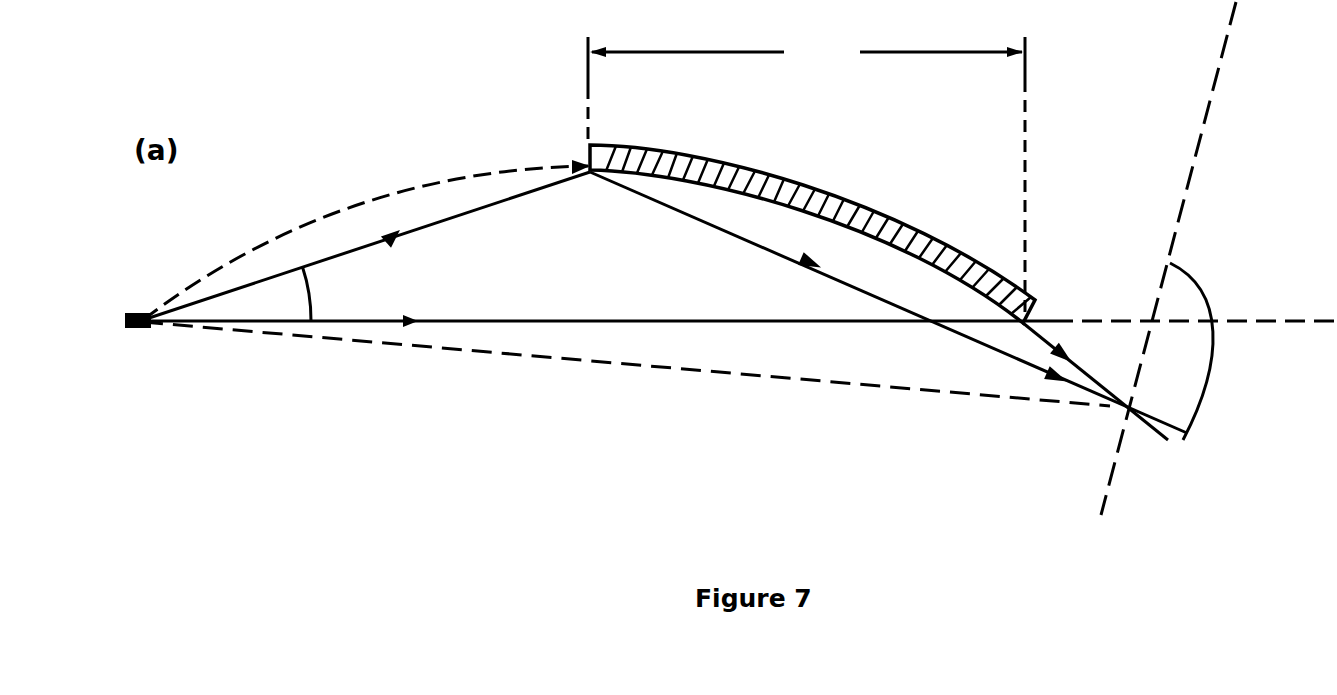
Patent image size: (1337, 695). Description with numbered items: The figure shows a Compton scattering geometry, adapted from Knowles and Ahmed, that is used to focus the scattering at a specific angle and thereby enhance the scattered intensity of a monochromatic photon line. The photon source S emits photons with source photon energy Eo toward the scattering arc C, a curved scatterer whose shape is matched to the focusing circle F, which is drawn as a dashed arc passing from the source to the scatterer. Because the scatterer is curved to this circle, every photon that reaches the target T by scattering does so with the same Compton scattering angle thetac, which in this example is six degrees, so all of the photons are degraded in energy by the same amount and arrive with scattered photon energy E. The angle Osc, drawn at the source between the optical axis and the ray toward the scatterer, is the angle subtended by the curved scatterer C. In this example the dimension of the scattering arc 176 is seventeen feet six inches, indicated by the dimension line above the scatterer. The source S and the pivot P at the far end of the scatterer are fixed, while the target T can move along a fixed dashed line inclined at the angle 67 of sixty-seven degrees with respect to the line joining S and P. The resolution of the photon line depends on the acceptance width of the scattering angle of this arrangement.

The photon source S is at (87, 323).
The focusing circle F is at (366, 240).
The source photon energy Eo is at (366, 246).
The scattering arc C is at (812, 230).
The scattered photon energy E is at (888, 302).
The pivot P is at (1095, 362).
The target T is at (628, 383).
The angle subtended by the curved scatterer Osc is at (277, 295).
The angle of the target line 67 is at (1203, 351).
The Compton scattering angle thetac is at (1219, 394).
The dimension of the scattering arc 176 is at (806, 173).